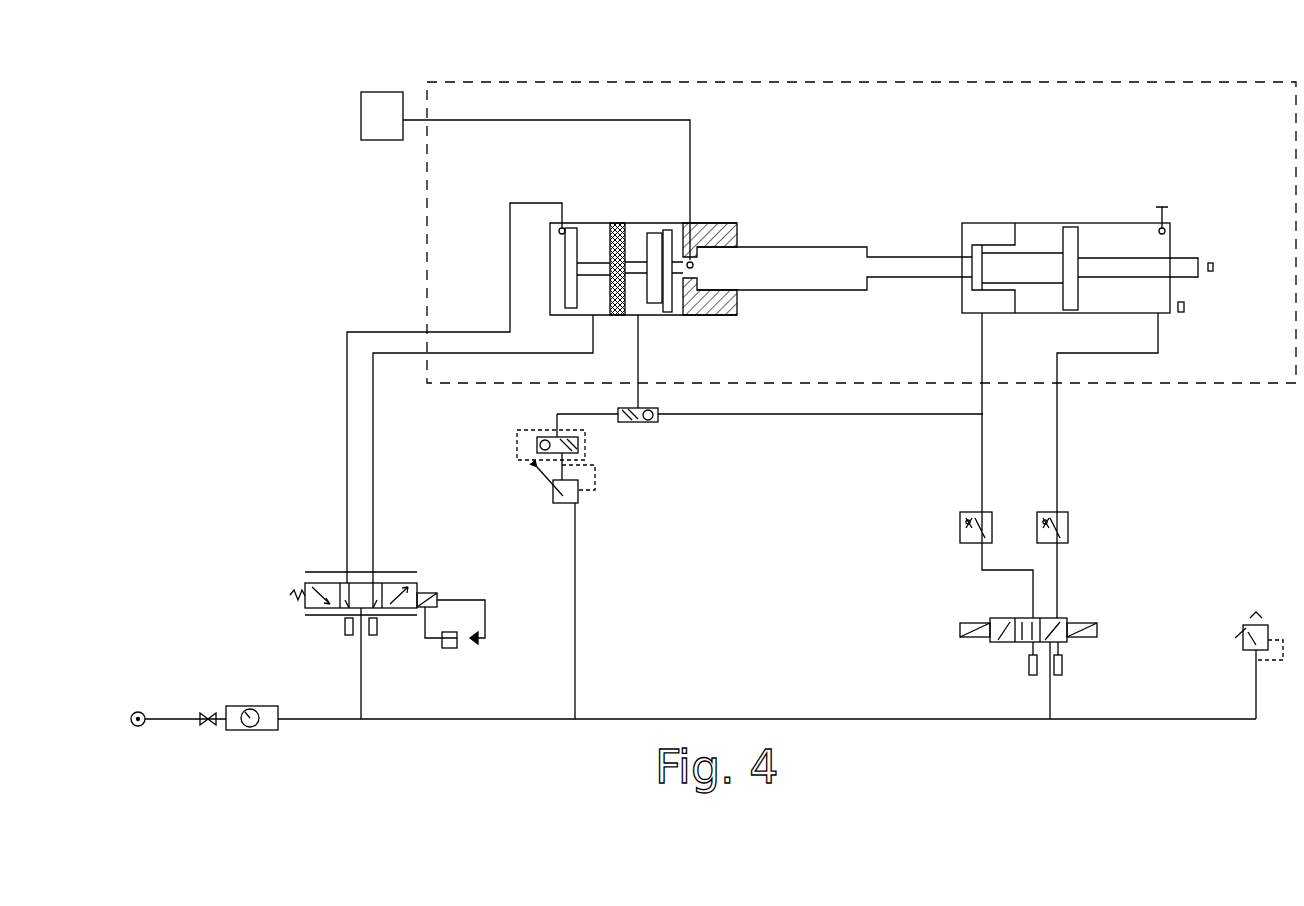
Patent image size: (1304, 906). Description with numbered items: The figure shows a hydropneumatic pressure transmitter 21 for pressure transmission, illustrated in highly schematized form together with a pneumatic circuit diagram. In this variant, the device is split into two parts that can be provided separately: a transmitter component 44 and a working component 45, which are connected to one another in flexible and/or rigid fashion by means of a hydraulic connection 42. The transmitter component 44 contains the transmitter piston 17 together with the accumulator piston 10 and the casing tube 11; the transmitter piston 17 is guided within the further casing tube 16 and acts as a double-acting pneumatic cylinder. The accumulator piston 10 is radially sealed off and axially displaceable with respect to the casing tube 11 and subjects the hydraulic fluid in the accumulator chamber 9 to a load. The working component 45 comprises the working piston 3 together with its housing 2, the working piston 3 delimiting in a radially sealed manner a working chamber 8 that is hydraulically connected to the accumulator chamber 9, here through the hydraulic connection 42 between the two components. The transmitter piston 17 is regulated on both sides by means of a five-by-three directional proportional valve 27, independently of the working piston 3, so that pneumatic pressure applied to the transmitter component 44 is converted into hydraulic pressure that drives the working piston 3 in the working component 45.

The pressure transmitter 21 is at (1073, 100).
The further casing tube 16 is at (586, 223).
The transmitter piston 17 is at (570, 264).
The casing tube 11 is at (636, 223).
The accumulator piston 10 is at (664, 315).
The accumulator chamber 9 is at (704, 315).
The transmitter component 44 is at (700, 215).
The hydraulic connection 42 is at (821, 240).
The working component 45 is at (1049, 212).
The working chamber 8 is at (975, 243).
The housing 2 is at (1088, 223).
The working piston 3 is at (1110, 250).
The 5/3 directional proportional valve 27 is at (396, 561).